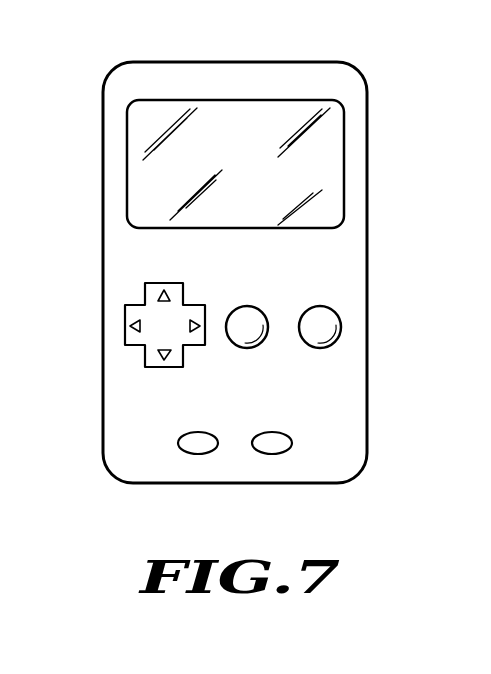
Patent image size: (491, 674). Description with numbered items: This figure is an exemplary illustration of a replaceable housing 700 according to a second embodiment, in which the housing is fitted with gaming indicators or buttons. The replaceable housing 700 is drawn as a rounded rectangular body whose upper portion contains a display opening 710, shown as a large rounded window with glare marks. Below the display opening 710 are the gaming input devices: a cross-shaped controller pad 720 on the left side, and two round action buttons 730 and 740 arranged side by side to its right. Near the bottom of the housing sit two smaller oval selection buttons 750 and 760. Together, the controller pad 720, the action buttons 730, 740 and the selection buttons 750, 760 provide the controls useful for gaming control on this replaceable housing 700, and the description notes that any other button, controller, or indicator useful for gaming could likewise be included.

The replaceable housing 700 is at (237, 61).
The display opening 710 is at (126, 162).
The controller pad 720 is at (124, 323).
The action button 730 is at (233, 307).
The action button 740 is at (307, 307).
The selection button 750 is at (179, 437).
The selection button 760 is at (254, 437).